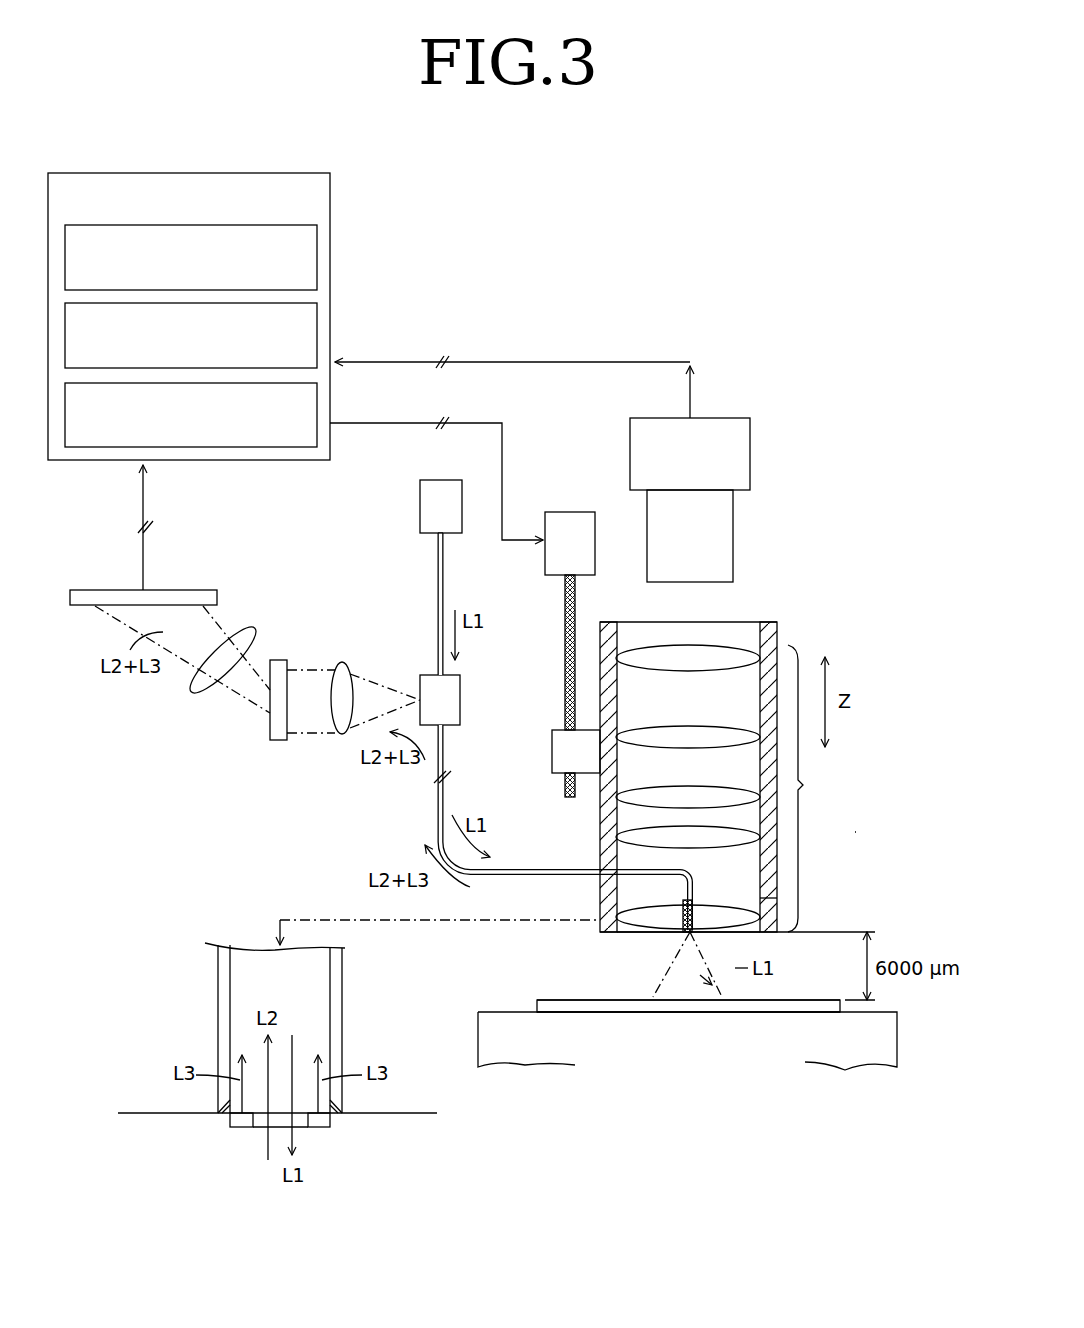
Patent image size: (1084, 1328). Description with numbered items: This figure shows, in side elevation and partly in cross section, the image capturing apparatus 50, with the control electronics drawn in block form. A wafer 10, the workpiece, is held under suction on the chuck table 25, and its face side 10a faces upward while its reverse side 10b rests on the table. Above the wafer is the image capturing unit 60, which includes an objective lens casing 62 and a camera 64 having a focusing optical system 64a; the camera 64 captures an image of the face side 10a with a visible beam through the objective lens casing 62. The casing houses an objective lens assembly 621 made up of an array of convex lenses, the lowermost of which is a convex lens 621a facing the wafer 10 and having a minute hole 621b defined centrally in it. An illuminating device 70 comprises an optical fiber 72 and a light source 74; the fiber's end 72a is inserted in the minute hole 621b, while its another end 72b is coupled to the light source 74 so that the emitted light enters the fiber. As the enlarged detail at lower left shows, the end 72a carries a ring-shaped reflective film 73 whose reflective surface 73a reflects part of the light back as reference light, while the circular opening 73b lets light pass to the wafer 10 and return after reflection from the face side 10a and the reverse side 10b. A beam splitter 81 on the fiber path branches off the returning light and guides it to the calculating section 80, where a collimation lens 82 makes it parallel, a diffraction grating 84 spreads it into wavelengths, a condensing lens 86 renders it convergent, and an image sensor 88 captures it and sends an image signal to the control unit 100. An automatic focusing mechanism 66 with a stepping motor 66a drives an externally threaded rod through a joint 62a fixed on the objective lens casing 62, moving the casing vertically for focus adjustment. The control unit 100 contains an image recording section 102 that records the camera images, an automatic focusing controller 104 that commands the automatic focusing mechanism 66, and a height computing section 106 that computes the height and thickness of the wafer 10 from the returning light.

The control unit 100 is at (158, 172).
The image recording section 102 is at (318, 260).
The automatic focusing controller 104 is at (318, 340).
The height computing section 106 is at (318, 418).
The illuminating device 70 is at (435, 846).
The optical fiber 72 is at (436, 640).
The end of optical fiber 72a is at (700, 935).
The another end of optical fiber 72b is at (435, 535).
The reflective film 73 is at (240, 1127).
The reflective surface 73a is at (228, 1115).
The circular opening 73b is at (300, 1127).
The light source 74 is at (415, 510).
The calculating section 80 is at (245, 669).
The beam splitter 81 is at (460, 716).
The collimation lens 82 is at (332, 718).
The diffraction grating 84 is at (270, 718).
The condensing lens 86 is at (250, 648).
The image sensor 88 is at (185, 590).
The image capturing unit 60 is at (503, 800).
The objective lens casing 62 is at (775, 628).
The joint 62a is at (555, 760).
The objective lens assembly 621 is at (732, 788).
The convex lens 621a is at (737, 934).
The minute hole 621b is at (777, 898).
The camera 64 is at (750, 455).
The focusing optical system 64a is at (720, 560).
The automatic focusing mechanism 66 is at (565, 672).
The stepping motor 66a is at (572, 518).
The image capturing apparatus 50 is at (855, 832).
The wafer 10 is at (670, 976).
The face side 10a is at (785, 1000).
The reverse side 10b is at (530, 1022).
The chuck table 25 is at (492, 1010).